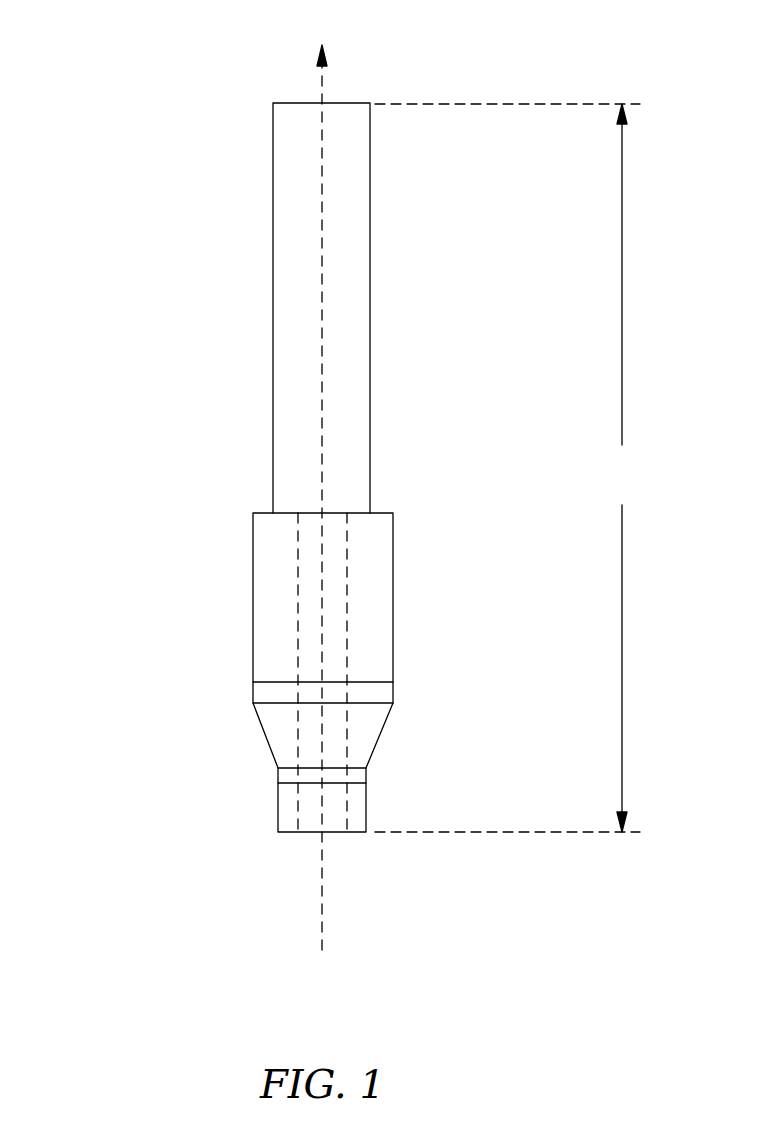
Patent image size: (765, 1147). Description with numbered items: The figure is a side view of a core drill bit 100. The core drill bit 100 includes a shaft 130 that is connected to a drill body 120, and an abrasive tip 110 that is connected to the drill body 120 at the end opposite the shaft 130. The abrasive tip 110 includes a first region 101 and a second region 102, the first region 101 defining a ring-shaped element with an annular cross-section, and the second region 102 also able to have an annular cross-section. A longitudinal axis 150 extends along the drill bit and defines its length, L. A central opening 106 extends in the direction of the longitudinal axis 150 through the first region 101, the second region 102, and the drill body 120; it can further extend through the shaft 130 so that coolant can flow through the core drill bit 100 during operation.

The core drill bit 100 is at (148, 48).
The shaft 130 is at (273, 150).
The longitudinal axis 150 is at (322, 250).
The drill body 120 is at (253, 563).
The second region 102 is at (253, 692).
The abrasive tip 110 is at (265, 738).
The first region 101 is at (278, 815).
The central opening 106 is at (337, 818).